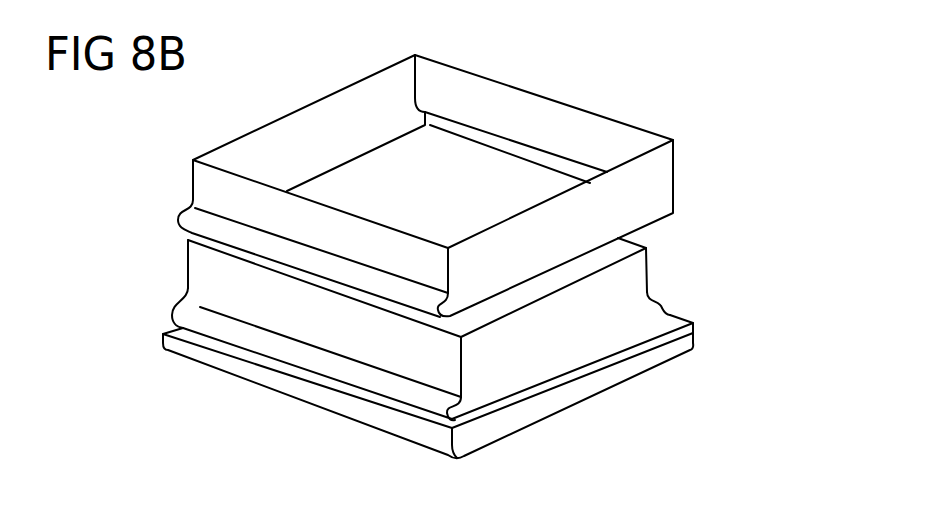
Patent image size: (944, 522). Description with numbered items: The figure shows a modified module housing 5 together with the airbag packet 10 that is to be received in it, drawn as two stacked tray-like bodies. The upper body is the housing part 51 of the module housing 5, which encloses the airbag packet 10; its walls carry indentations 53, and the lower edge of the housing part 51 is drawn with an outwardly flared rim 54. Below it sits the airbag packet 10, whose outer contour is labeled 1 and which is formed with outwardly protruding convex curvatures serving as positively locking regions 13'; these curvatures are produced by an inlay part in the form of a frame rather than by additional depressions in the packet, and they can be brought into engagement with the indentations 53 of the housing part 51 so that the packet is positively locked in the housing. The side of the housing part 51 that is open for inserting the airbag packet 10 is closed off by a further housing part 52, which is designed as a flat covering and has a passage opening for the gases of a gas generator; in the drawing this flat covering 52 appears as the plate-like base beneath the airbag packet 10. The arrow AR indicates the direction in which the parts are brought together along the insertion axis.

The module housing 5 is at (409, 166).
The housing part 51 is at (642, 198).
The indentations 53 is at (518, 148).
The flange of upper tray 54 is at (240, 229).
The lower tray 1 is at (471, 368).
The airbag packet 10 is at (650, 277).
The positively locking regions 13' is at (475, 398).
The further housing part 52 is at (685, 342).
The assembly direction arrow AR is at (773, 130).